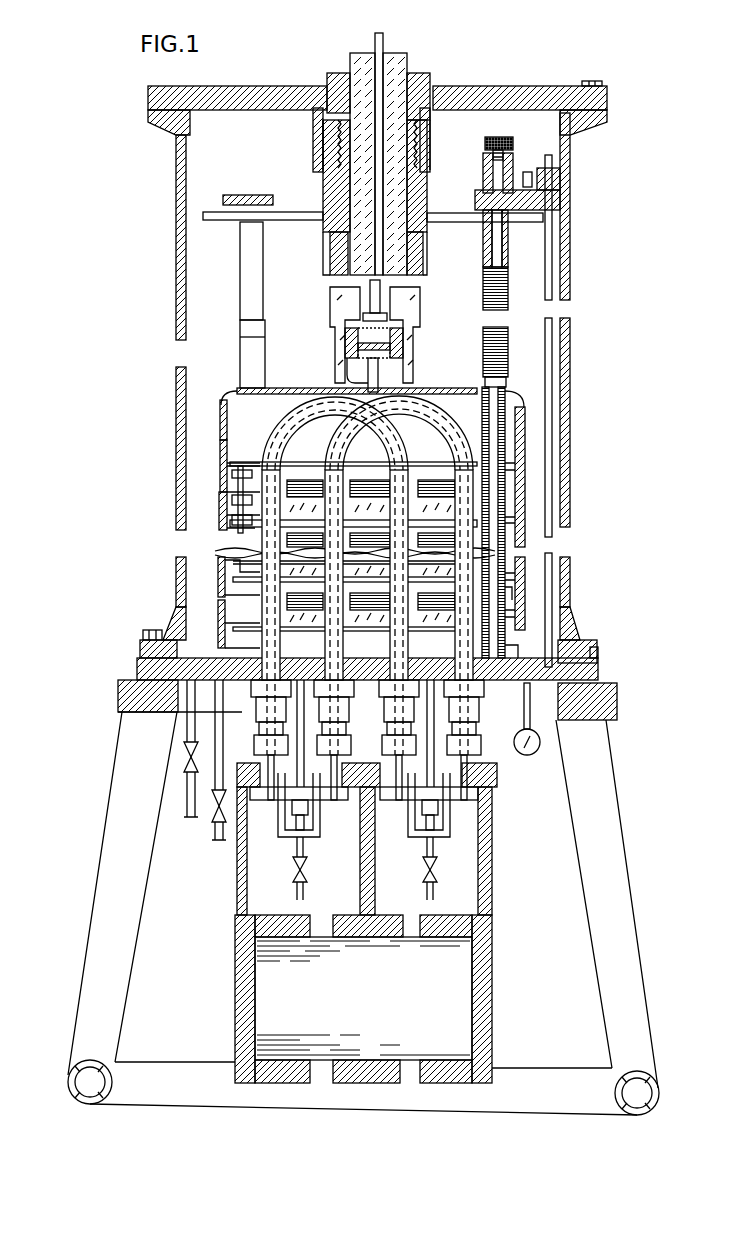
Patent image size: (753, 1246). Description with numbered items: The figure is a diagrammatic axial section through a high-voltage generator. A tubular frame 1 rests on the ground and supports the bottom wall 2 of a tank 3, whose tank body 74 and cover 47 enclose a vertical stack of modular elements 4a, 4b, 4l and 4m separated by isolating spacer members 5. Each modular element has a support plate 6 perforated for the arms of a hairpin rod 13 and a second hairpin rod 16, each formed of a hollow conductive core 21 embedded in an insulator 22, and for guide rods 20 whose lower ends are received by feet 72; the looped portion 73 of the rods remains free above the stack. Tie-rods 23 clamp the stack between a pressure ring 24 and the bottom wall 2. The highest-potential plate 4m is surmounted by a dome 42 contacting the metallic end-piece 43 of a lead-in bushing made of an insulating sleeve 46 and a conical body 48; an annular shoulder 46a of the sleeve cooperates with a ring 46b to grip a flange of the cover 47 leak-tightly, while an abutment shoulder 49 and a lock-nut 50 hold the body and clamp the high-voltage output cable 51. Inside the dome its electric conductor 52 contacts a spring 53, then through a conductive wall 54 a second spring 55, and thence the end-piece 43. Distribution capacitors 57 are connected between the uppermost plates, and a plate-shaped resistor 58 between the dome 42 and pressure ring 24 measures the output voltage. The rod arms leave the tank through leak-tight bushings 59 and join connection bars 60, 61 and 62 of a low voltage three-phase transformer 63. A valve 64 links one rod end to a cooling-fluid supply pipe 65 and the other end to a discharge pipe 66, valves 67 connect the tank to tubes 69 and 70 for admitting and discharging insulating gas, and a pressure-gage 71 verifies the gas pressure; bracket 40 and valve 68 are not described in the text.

The tubular frame 1 is at (90, 922).
The bottom wall 2 is at (137, 652).
The tank 3 is at (563, 510).
The modular element 4a is at (216, 620).
The modular element 4b is at (216, 573).
The modular element 4l is at (214, 515).
The modular element 4m is at (216, 468).
The isolating spacer member 5 is at (508, 587).
The support plate 6 is at (297, 460).
The hairpin rod 13 is at (217, 425).
The second hairpin rod 16 is at (545, 455).
The guide rod 20 is at (500, 252).
The conductive core 21 is at (275, 430).
The insulator 22 is at (292, 440).
The tie-rod 23 is at (552, 283).
The pressure ring 24 is at (527, 200).
The bracket 40 is at (527, 528).
The dome 42 is at (223, 400).
The metallic end-piece 43 is at (378, 377).
The insulating sleeve 46 is at (432, 193).
The annular shoulder 46a is at (327, 192).
The ring 46b is at (428, 147).
The cover 47 is at (540, 95).
The conical body 48 is at (352, 120).
The abutment shoulder 49 is at (357, 62).
The lock-nut 50 is at (427, 82).
The high-voltage output cable 51 is at (390, 47).
The electric conductor 52 is at (377, 255).
The spring 53 is at (355, 330).
The conductive wall 54 is at (343, 347).
The second spring 55 is at (350, 377).
The distribution capacitor 57 is at (227, 497).
The resistor 58 is at (245, 260).
The leak-tight bushing 59 is at (490, 741).
The connection bar 60 is at (238, 899).
The connection bar 61 is at (365, 905).
The connection bar 62 is at (493, 905).
The low voltage three-phase transformer 63 is at (375, 1008).
The valve 64 is at (422, 850).
The pipe 65 is at (420, 882).
The discharge pipe 66 is at (297, 890).
The valve 67 is at (217, 815).
The valve 68 is at (187, 767).
The tube 69 is at (217, 783).
The tube 70 is at (190, 725).
The pressure-gage 71 is at (540, 742).
The foot 72 is at (505, 647).
The looped portion 73 is at (453, 412).
The tank body 74 is at (565, 362).